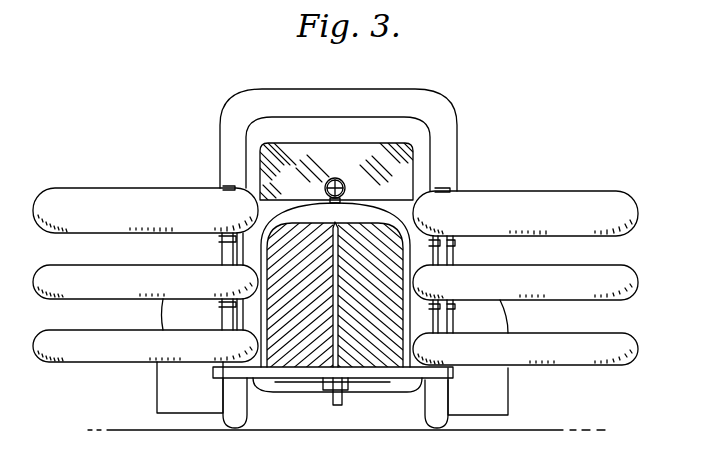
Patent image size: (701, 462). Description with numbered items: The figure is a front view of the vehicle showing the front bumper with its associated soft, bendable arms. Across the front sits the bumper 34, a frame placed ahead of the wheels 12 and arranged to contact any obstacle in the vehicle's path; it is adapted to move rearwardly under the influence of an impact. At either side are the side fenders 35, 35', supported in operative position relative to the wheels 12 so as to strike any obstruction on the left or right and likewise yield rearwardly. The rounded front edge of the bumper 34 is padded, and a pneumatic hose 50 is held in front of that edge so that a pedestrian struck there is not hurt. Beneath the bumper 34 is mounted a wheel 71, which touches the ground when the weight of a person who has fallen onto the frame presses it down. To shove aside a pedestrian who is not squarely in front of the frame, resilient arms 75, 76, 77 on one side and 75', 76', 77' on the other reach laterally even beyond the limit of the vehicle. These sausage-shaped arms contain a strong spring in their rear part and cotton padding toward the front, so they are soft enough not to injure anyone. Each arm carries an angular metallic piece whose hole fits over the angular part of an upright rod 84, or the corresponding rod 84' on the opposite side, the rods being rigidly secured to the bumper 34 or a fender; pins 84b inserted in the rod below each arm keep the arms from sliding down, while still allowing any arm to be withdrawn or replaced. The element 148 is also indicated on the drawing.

The wheels 12 is at (232, 415).
The bumper 34 is at (220, 370).
The side fender 35 is at (162, 360).
The side fender 35' is at (509, 357).
The pneumatic hose 50 is at (393, 376).
The wheel 71 is at (339, 404).
The resilient arm 75 is at (145, 196).
The resilient arm 75' is at (525, 197).
The resilient arm 76 is at (145, 269).
The resilient arm 76' is at (525, 271).
The resilient arm 77 is at (145, 346).
The resilient arm 77' is at (525, 349).
The rod 84 is at (189, 281).
The pin 84b is at (220, 240).
The rod 84' is at (482, 260).
The coupling block 148 is at (328, 380).